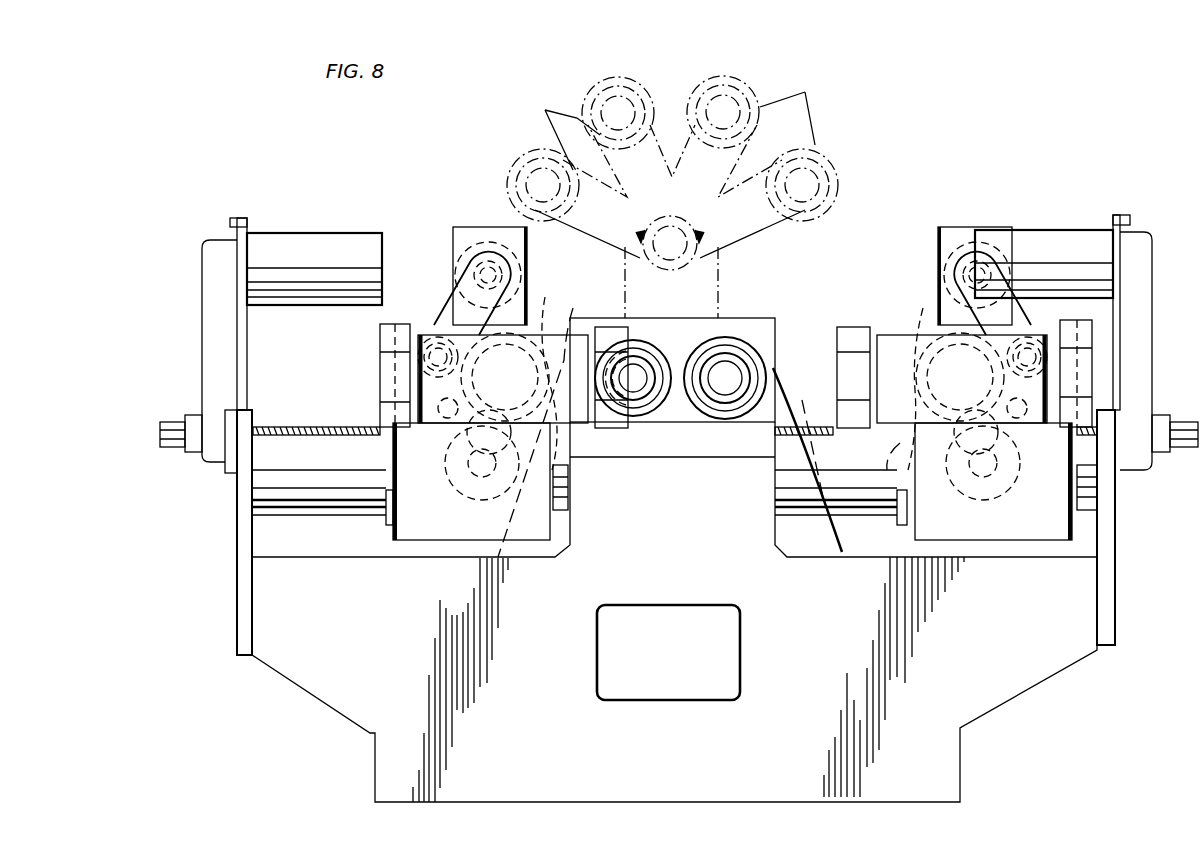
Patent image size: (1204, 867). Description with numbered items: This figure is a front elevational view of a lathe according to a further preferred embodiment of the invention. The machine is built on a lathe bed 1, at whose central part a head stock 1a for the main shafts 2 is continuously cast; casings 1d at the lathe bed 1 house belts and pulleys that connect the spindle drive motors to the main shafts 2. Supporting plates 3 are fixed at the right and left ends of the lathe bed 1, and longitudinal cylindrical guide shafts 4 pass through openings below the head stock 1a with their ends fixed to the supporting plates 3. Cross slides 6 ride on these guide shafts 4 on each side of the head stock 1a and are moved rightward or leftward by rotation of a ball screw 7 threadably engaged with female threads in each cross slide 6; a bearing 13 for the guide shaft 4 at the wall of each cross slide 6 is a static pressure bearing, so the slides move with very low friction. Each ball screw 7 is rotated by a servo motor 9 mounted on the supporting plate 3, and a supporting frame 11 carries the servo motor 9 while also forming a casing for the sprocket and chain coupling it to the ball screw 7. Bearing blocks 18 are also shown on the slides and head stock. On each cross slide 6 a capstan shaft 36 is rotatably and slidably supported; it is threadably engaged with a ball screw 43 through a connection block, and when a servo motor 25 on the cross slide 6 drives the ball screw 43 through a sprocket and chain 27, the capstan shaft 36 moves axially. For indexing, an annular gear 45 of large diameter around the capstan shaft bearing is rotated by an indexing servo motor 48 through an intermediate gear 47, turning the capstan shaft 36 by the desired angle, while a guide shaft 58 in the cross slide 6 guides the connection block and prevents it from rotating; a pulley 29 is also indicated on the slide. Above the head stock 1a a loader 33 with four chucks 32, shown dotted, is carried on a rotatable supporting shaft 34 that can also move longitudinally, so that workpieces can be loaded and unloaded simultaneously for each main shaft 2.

The lathe bed 1 is at (651, 567).
The head stock 1a is at (750, 326).
The casings 1d is at (520, 555).
The main shaft 2 is at (637, 386).
The supporting plates 3 is at (240, 568).
The guide shaft 4 is at (328, 505).
The cross slide 6 is at (413, 520).
The ball screw 7 is at (305, 427).
The servo motor 9 is at (325, 245).
The supporting frame 11 is at (215, 326).
The bearing 13 is at (389, 492).
The bearing block 18 is at (617, 340).
The servo motor 25 is at (487, 235).
The sprocket and chain 27 is at (438, 340).
The drive pulley 29 is at (505, 360).
The chucks 32 is at (813, 88).
The loader 33 is at (674, 85).
The rotatable supporting shaft 34 is at (700, 240).
The capstan shaft 36 is at (740, 375).
The ball screw 43 is at (428, 350).
The annular gear 45 is at (893, 468).
The intermediate gear 47 is at (558, 481).
The indexing servo motor 48 is at (479, 500).
The guide shaft 58 is at (446, 420).